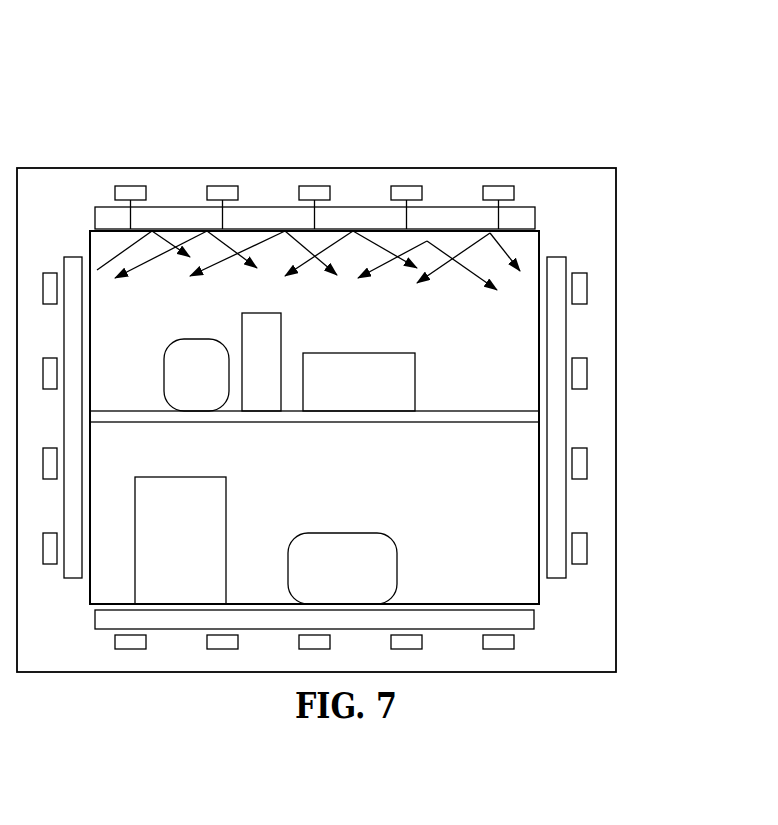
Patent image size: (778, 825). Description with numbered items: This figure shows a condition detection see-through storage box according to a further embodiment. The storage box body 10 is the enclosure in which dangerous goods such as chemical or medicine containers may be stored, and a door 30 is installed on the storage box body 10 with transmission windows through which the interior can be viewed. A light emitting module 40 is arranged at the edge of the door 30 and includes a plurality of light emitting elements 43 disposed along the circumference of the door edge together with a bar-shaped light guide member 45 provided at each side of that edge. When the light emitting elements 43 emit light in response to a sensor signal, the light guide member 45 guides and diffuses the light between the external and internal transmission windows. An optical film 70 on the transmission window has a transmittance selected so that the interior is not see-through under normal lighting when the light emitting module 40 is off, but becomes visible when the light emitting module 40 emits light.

The storage box body 10 is at (568, 182).
The door 30 is at (539, 240).
The light emitting module 40 is at (315, 123).
The light emitting element 43 is at (129, 186).
The light guide member 45 is at (131, 78).
The optical film 70 is at (505, 345).